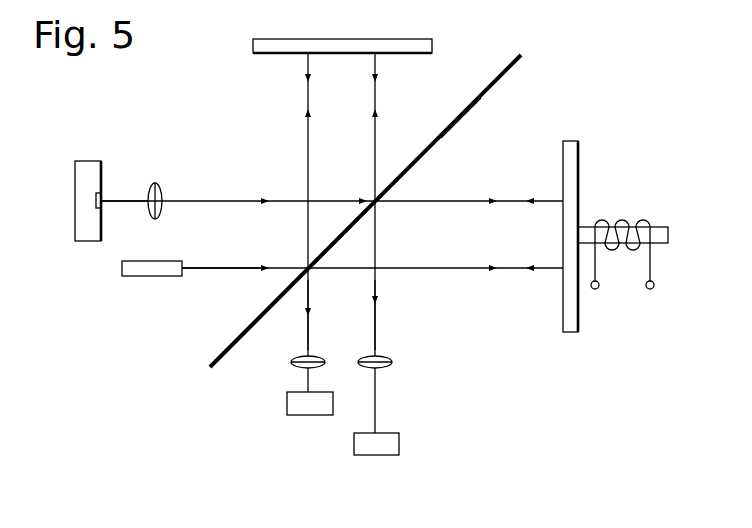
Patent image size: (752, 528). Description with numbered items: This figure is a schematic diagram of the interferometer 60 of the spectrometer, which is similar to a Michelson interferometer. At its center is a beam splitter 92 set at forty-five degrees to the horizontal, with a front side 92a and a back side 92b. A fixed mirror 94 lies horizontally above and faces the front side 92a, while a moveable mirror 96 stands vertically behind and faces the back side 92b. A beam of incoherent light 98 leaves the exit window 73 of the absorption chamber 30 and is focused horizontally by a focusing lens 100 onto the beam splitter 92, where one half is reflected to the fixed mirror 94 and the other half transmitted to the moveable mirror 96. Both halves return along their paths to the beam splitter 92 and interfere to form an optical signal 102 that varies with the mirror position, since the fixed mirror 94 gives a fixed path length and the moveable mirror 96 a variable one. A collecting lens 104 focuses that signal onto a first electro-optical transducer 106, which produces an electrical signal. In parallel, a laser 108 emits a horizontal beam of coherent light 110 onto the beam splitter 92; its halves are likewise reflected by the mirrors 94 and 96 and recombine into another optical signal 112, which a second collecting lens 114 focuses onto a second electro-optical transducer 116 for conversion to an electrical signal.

The absorption chamber 30 is at (78, 178).
The exit window 73 is at (100, 207).
The beam of incoherent light 98 is at (132, 200).
The focusing lens 100 is at (163, 192).
The laser 108 is at (130, 272).
The beam of coherent light 110 is at (212, 270).
The fixed mirror 94 is at (353, 42).
The beam splitter 92 is at (517, 46).
The front side 92a is at (445, 128).
The back side 92b is at (467, 108).
The interferometer 60 is at (558, 56).
The moveable mirror 96 is at (577, 163).
The optical signal 112 is at (310, 318).
The optical signal 102 is at (376, 333).
The second collecting lens 114 is at (290, 365).
The collecting lens 104 is at (393, 372).
The second electro-optical transducer 116 is at (295, 413).
The first electro-optical transducer 106 is at (398, 455).